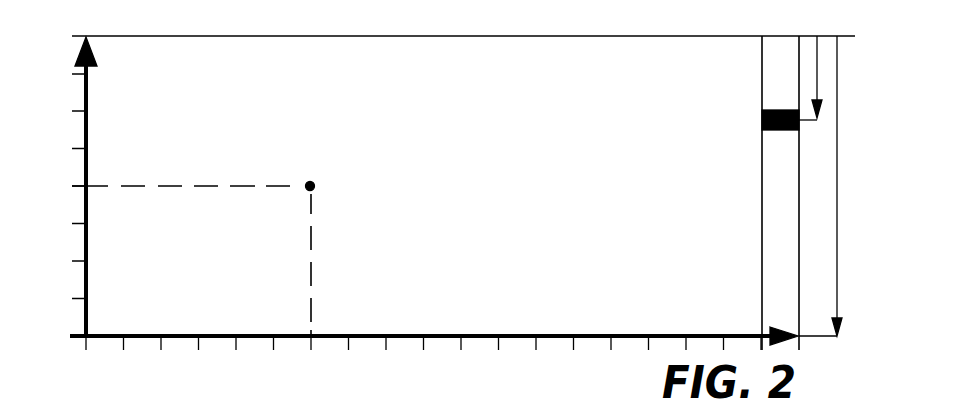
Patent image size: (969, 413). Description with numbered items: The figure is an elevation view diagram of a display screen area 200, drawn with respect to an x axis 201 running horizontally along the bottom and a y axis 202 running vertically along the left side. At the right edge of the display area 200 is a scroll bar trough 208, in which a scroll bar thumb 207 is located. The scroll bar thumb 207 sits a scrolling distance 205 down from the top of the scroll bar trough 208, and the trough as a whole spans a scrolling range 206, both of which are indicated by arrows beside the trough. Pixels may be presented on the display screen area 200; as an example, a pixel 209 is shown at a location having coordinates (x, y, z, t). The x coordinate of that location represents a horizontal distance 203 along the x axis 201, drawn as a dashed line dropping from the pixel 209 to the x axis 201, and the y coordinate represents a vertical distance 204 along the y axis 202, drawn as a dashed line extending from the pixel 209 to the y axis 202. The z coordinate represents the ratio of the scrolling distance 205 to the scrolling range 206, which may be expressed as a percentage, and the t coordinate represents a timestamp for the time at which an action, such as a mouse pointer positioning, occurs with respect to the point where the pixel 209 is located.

The display screen area 200 is at (686, 27).
The x axis 201 is at (140, 339).
The y axis 202 is at (82, 285).
The horizontal distance 203 is at (314, 262).
The vertical distance 204 is at (168, 184).
The scrolling distance 205 is at (819, 82).
The scrolling range 206 is at (838, 210).
The scroll bar thumb 207 is at (762, 124).
The scroll bar trough 208 is at (762, 248).
The pixel 209 is at (309, 180).